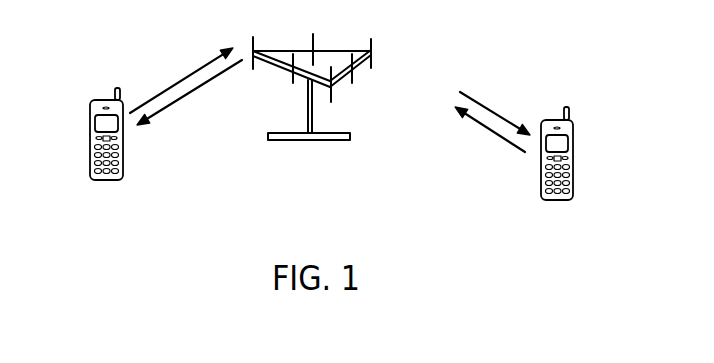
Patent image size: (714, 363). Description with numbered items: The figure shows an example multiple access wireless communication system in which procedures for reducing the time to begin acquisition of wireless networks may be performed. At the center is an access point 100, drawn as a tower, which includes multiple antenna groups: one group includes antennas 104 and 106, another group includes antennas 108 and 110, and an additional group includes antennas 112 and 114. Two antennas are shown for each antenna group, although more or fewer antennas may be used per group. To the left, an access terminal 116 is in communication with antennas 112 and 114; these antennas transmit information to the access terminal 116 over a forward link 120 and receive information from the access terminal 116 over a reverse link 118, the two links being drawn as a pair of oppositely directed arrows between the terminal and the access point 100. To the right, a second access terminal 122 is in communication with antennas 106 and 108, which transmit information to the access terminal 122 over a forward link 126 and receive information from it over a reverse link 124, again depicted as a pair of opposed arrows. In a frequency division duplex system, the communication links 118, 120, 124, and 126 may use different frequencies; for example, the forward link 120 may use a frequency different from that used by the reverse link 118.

The access point 100 is at (293, 141).
The antenna 104 is at (332, 95).
The antenna 106 is at (352, 78).
The antenna 108 is at (373, 57).
The antenna 110 is at (313, 35).
The antenna 112 is at (253, 41).
The antenna 114 is at (293, 76).
The access terminal 116 is at (90, 116).
The reverse link 118 is at (191, 75).
The forward link 120 is at (178, 99).
The access terminal 122 is at (573, 145).
The reverse link 124 is at (500, 136).
The forward link 126 is at (493, 111).